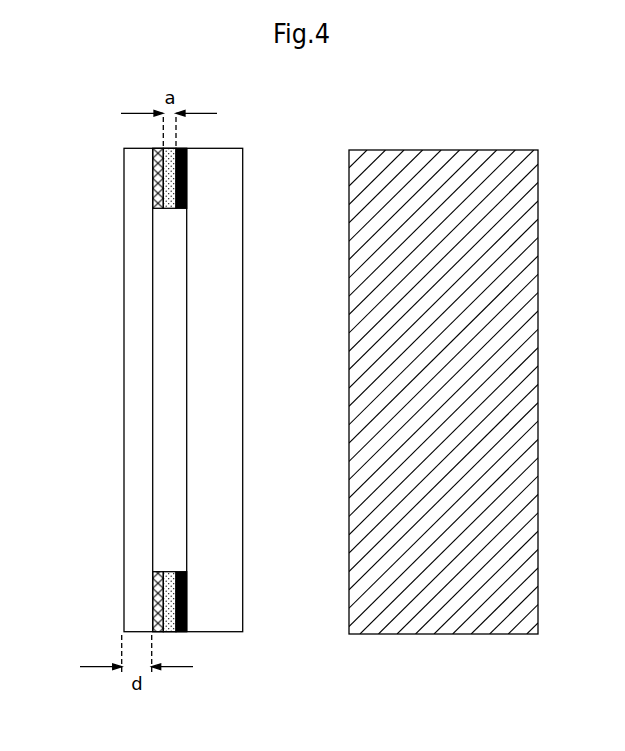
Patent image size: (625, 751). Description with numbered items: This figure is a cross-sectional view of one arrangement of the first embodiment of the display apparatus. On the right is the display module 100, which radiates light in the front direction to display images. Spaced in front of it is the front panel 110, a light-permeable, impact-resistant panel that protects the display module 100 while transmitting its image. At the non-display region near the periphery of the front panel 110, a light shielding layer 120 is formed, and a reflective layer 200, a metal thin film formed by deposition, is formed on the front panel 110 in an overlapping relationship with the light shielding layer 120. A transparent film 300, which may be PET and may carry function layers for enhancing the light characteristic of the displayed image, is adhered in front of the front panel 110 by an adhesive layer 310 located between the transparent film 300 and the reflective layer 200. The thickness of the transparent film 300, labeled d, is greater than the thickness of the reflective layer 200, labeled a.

The display module 100 is at (445, 162).
The front panel 110 is at (218, 627).
The light shielding layer 120 is at (188, 175).
The reflective layer 200 is at (170, 198).
The transparent film 300 is at (132, 562).
The adhesive layer 310 is at (153, 163).